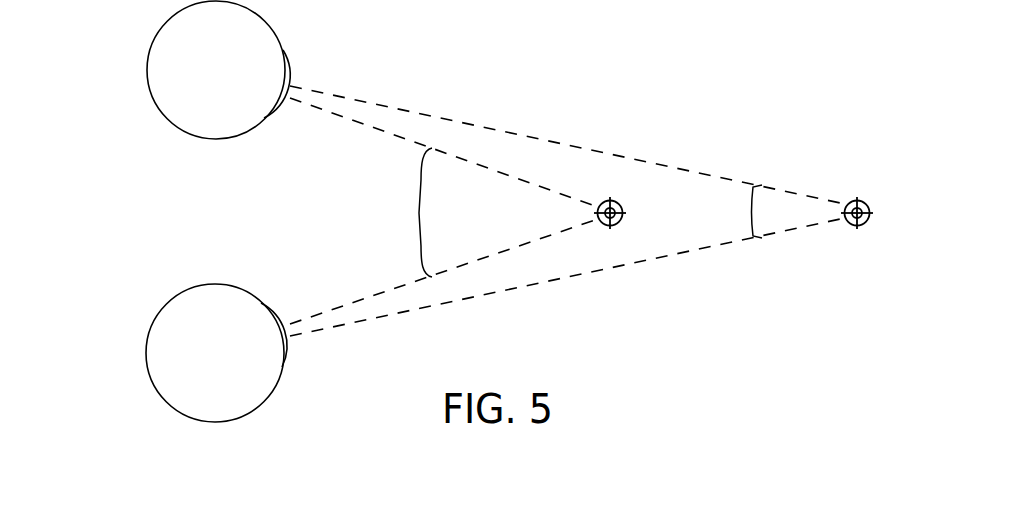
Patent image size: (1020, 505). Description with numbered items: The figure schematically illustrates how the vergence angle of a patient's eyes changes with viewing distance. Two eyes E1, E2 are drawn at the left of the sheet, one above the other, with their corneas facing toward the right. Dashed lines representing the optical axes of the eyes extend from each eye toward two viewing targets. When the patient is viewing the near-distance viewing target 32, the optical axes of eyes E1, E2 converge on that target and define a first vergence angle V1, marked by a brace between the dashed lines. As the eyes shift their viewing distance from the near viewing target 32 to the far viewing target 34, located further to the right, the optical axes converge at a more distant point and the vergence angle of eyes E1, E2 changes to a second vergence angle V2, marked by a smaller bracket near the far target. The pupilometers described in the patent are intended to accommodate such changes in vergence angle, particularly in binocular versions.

The near-distance viewing target 32 is at (604, 200).
The far viewing target 34 is at (856, 199).
The eye E1 is at (184, 70).
The eye E2 is at (182, 353).
The first vergence angle V1 is at (417, 212).
The second vergence angle V2 is at (750, 211).